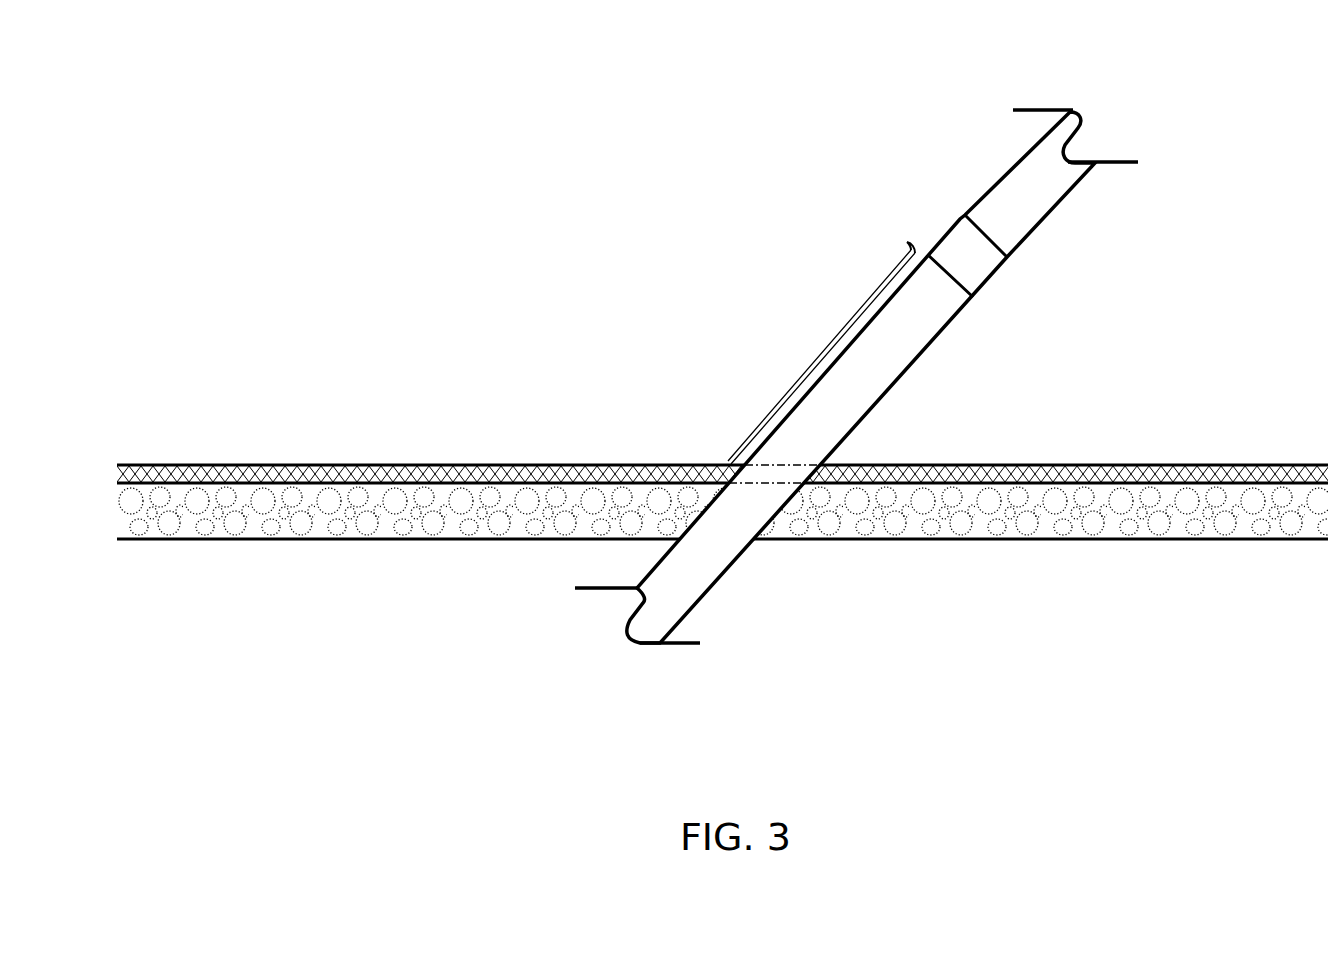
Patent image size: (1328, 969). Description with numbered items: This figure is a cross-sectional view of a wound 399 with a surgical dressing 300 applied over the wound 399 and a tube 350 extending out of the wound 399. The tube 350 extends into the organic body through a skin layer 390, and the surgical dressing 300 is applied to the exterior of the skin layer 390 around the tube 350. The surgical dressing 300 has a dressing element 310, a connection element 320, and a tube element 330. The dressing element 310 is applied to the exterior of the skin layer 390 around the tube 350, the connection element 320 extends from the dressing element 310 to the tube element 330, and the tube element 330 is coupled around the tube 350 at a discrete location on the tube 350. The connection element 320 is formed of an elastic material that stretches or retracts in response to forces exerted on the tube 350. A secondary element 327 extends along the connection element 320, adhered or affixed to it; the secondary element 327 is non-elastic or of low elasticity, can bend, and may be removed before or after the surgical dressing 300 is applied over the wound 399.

The surgical dressing 300 is at (635, 365).
The dressing element 310 is at (310, 463).
The connection element 320 is at (847, 330).
The secondary element 327 is at (906, 247).
The tube element 330 is at (973, 270).
The tube 350 is at (1015, 200).
The skin layer 390 is at (243, 507).
The wound 399 is at (793, 507).